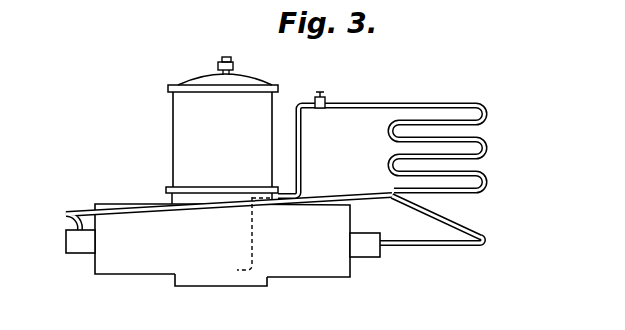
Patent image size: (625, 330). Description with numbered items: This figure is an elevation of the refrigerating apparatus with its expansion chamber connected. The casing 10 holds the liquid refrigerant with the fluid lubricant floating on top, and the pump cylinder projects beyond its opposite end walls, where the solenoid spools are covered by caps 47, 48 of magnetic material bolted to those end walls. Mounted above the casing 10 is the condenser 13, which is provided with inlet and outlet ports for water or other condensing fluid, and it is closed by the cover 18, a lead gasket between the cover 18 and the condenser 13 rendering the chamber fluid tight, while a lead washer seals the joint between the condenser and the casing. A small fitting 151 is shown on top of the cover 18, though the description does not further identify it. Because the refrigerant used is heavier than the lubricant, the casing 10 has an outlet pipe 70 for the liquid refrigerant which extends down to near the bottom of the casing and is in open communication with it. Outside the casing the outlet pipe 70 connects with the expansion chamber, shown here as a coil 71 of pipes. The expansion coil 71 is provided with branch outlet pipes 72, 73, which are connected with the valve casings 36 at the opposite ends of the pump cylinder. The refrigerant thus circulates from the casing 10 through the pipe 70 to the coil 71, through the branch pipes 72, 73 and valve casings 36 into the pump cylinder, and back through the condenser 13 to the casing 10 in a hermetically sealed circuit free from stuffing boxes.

The casing 10 is at (215, 287).
The condenser 13 is at (173, 127).
The cover 18 is at (189, 80).
The vent valve 151 is at (219, 66).
The valve casings 36 is at (78, 254).
The cap 47 is at (126, 275).
The cap 48 is at (319, 278).
The outlet pipe 70 is at (251, 237).
The expansion coil 71 is at (487, 115).
The branch outlet pipe 72 is at (325, 198).
The branch outlet pipe 73 is at (438, 219).